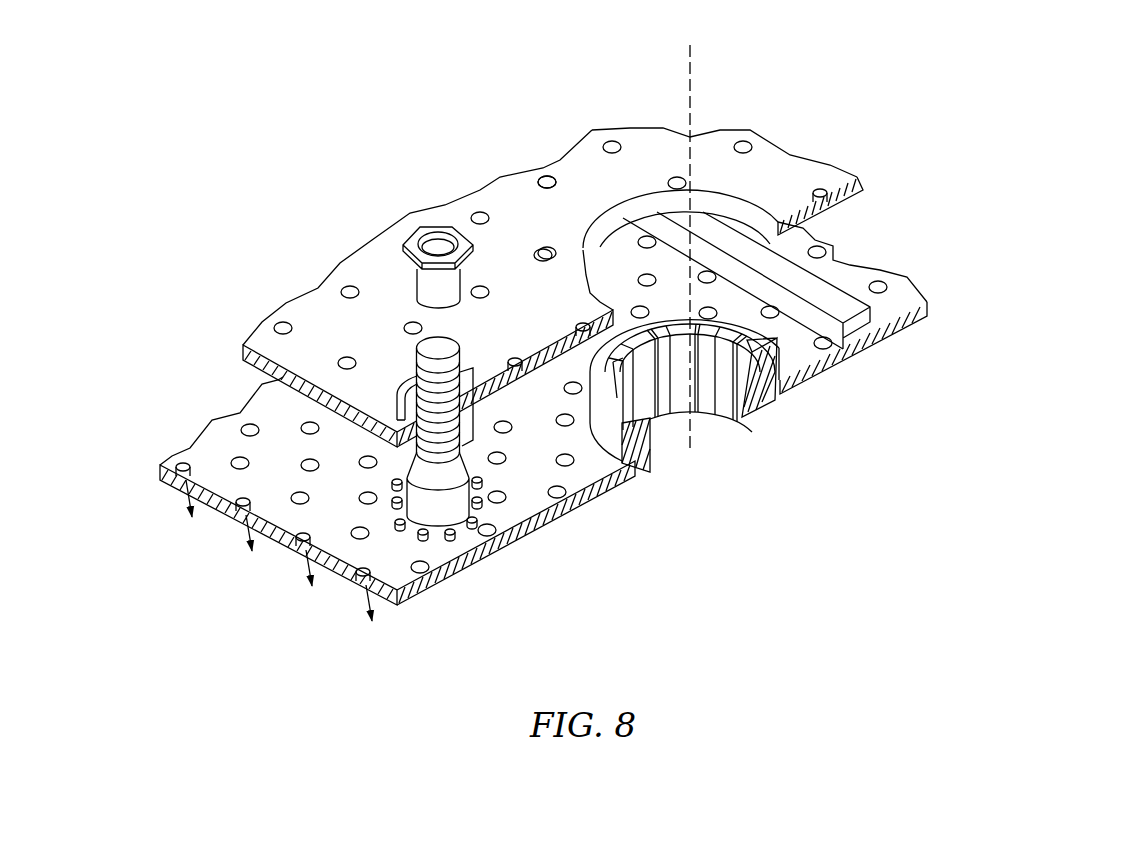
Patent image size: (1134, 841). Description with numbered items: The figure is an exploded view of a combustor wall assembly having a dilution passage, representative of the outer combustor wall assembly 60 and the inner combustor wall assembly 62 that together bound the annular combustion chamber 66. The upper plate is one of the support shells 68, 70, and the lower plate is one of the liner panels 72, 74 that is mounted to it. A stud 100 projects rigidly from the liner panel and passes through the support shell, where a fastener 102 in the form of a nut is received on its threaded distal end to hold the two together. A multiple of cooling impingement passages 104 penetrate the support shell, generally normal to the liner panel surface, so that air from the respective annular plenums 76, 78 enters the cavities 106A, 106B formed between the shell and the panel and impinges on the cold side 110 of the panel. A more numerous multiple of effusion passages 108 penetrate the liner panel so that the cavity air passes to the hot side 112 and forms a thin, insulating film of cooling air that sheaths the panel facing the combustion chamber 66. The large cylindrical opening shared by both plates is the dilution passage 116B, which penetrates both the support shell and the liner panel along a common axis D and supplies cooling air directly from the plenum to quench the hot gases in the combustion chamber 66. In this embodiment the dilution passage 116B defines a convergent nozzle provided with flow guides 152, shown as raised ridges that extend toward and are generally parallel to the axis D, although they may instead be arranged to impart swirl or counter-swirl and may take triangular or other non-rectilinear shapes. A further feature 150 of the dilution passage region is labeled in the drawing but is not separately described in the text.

The outer combustor wall assembly 60 is at (674, 293).
The inner combustor wall assembly 62 is at (1042, 111).
The support shell 68 is at (745, 207).
The support shell 70 is at (829, 138).
The liner panel 72 is at (864, 297).
The liner panel 74 is at (958, 291).
The outer annular plenum 76 is at (428, 288).
The inner annular plenum 78 is at (353, 197).
The stud 100 is at (427, 358).
The fastener 102 is at (447, 228).
The cooling impingement passage 104 is at (548, 182).
The cavity 106A is at (223, 467).
The cavity 106B is at (208, 393).
The effusion passage 108 is at (879, 285).
The cold side 110 is at (520, 495).
The hot side 112 is at (488, 560).
The dilution passage 116B is at (714, 418).
The collar ring 150 is at (643, 445).
The flow guide 152 is at (667, 395).
The combustion chamber 66 is at (822, 552).
The axis D is at (690, 73).